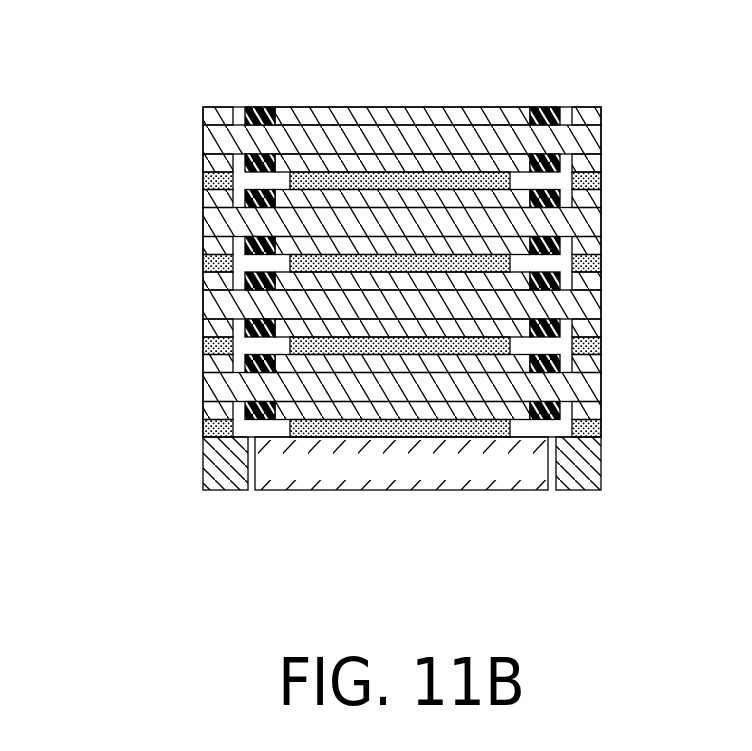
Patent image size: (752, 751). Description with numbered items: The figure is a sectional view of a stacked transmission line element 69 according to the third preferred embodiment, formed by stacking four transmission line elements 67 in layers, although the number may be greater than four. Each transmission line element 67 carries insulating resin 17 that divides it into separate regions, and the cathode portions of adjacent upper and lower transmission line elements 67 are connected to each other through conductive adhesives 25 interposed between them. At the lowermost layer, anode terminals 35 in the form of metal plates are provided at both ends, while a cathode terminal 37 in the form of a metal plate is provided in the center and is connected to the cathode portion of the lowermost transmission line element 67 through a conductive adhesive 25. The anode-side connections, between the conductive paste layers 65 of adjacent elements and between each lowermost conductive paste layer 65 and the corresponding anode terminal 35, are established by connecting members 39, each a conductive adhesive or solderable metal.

The insulating resin 17 is at (263, 108).
The conductive adhesive 25 is at (418, 242).
The anode terminal 35 is at (227, 473).
The cathode terminal 37 is at (328, 473).
The connecting member 39 is at (201, 180).
The conductive paste layer 65 is at (601, 160).
The transmission line element 67 is at (188, 140).
The stacked transmission line element 69 is at (603, 97).